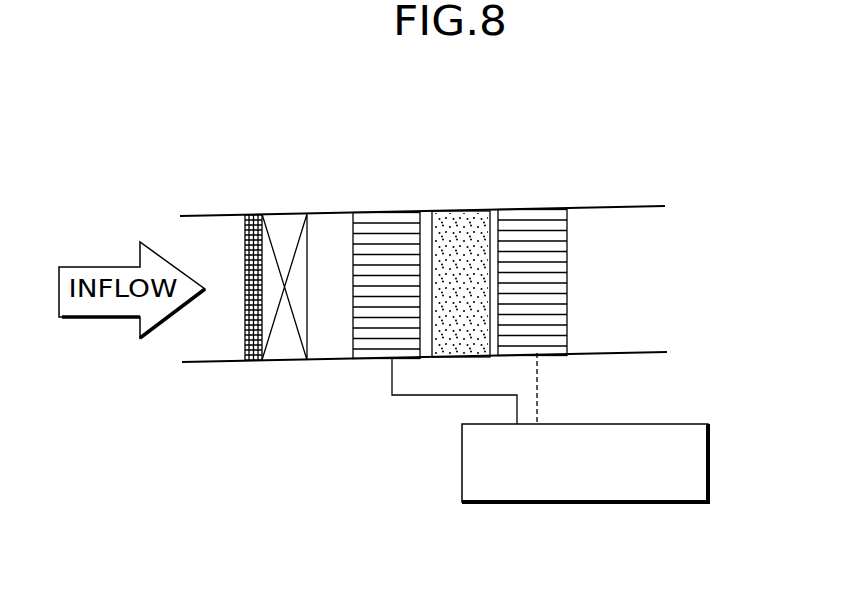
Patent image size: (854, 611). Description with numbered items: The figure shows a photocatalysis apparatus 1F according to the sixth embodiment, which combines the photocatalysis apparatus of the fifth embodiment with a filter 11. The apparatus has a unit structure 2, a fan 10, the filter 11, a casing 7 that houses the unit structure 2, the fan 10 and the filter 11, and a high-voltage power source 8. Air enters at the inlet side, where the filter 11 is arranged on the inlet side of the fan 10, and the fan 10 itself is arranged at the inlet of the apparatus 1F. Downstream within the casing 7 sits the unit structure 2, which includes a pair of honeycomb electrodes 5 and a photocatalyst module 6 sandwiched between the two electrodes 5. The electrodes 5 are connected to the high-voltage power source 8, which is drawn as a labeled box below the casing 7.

The air cleaning apparatus 1F is at (125, 138).
The mesh pre-filter 11 is at (250, 214).
The filter 10 is at (285, 362).
The electrostatic dust collecting section 2 is at (570, 202).
The discharge electrode 5 is at (373, 360).
The dielectric collecting member 6 is at (463, 358).
The counter electrode 7 is at (610, 353).
The high-voltage power source 8 is at (712, 460).